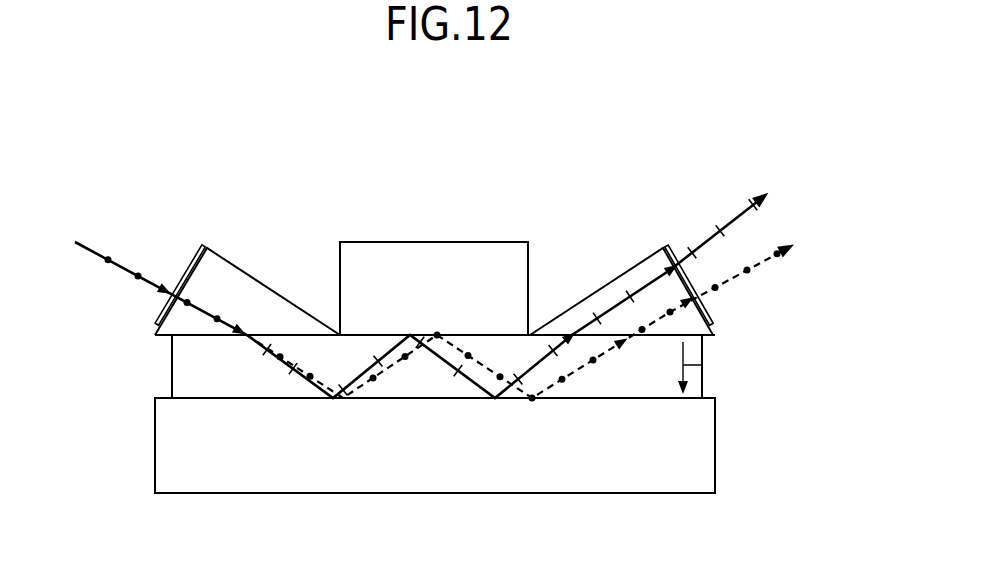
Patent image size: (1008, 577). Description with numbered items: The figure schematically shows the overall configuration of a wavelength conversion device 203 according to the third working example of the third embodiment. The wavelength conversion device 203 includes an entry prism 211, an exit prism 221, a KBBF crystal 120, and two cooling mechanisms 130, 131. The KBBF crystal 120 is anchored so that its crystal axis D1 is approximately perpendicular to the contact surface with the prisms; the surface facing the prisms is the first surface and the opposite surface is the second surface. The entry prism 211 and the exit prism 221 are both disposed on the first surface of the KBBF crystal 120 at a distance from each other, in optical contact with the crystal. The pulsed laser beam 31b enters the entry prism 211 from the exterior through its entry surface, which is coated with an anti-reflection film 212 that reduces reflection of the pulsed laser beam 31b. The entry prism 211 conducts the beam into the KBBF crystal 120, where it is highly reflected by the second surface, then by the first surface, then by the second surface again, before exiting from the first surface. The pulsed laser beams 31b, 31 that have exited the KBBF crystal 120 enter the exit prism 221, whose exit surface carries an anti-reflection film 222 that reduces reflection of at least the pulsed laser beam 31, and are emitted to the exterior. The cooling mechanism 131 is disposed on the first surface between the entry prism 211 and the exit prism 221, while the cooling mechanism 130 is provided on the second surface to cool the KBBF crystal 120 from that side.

The wavelength conversion device 203 is at (523, 149).
The cooling mechanism 130 is at (435, 495).
The KBBF crystal 120 is at (171, 370).
The cooling mechanism 131 is at (432, 241).
The entry prism 211 is at (229, 272).
The anti-reflection film 212 is at (189, 266).
The exit prism 221 is at (635, 270).
The anti-reflection film 222 is at (713, 314).
The crystal axis D1 is at (702, 365).
The pulsed laser beam 31 is at (750, 216).
The pulsed laser beam 31b is at (87, 255).